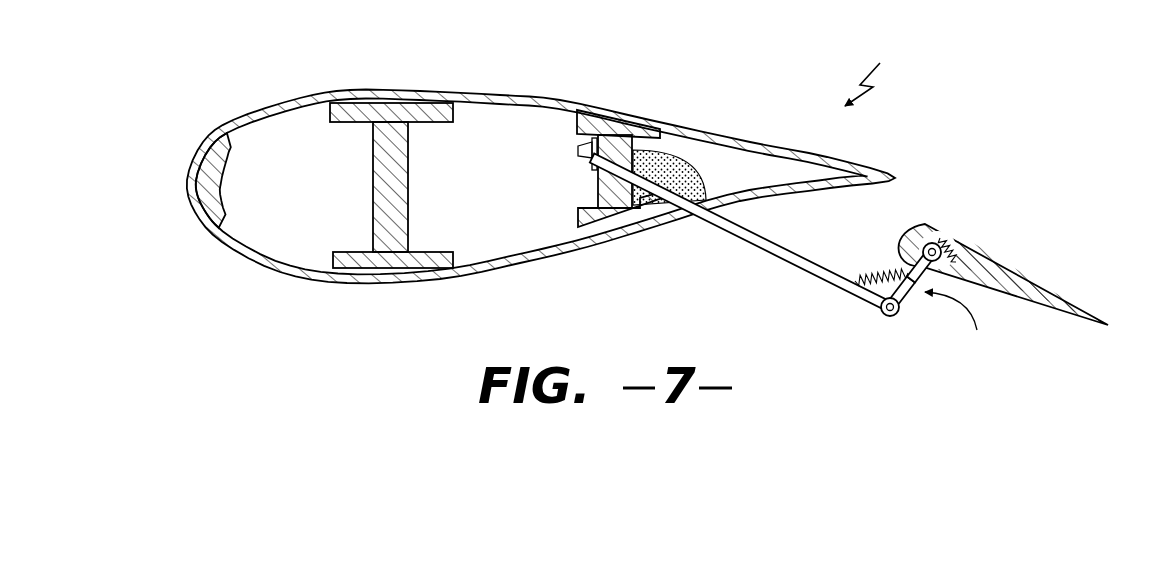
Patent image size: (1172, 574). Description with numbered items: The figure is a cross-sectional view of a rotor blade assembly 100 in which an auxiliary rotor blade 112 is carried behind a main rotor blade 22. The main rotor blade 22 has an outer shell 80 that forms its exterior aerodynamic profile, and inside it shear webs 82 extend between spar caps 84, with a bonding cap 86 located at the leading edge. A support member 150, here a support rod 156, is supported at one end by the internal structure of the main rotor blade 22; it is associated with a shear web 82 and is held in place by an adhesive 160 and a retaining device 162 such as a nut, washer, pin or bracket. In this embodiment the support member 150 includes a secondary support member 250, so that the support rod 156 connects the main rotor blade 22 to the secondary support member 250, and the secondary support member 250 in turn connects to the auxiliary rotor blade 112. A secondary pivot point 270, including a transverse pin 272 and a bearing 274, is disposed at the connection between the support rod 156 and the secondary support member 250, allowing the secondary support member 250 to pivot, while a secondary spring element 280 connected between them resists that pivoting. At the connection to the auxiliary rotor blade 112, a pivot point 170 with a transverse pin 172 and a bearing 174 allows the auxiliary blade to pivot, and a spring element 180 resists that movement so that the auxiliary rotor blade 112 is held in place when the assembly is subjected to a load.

The main rotor blade 22 is at (541, 156).
The outer shell 80 is at (295, 98).
The shear web 82 is at (373, 217).
The spar cap 84 is at (413, 108).
The bonding cap 86 is at (205, 192).
The rotor blade assembly 100 is at (891, 68).
The auxiliary rotor blade 112 is at (1031, 274).
The support member 150 is at (741, 244).
The support rod 156 is at (820, 282).
The adhesive 160 is at (672, 157).
The retaining device 162 is at (588, 167).
The pivot point 170 is at (930, 232).
The transverse pin 172 is at (942, 228).
The bearing 174 is at (929, 230).
The spring element 180 is at (962, 238).
The secondary support member 250 is at (971, 325).
The secondary pivot point 270 is at (847, 348).
The transverse pin 272 is at (900, 316).
The bearing 274 is at (880, 318).
The secondary spring element 280 is at (875, 273).